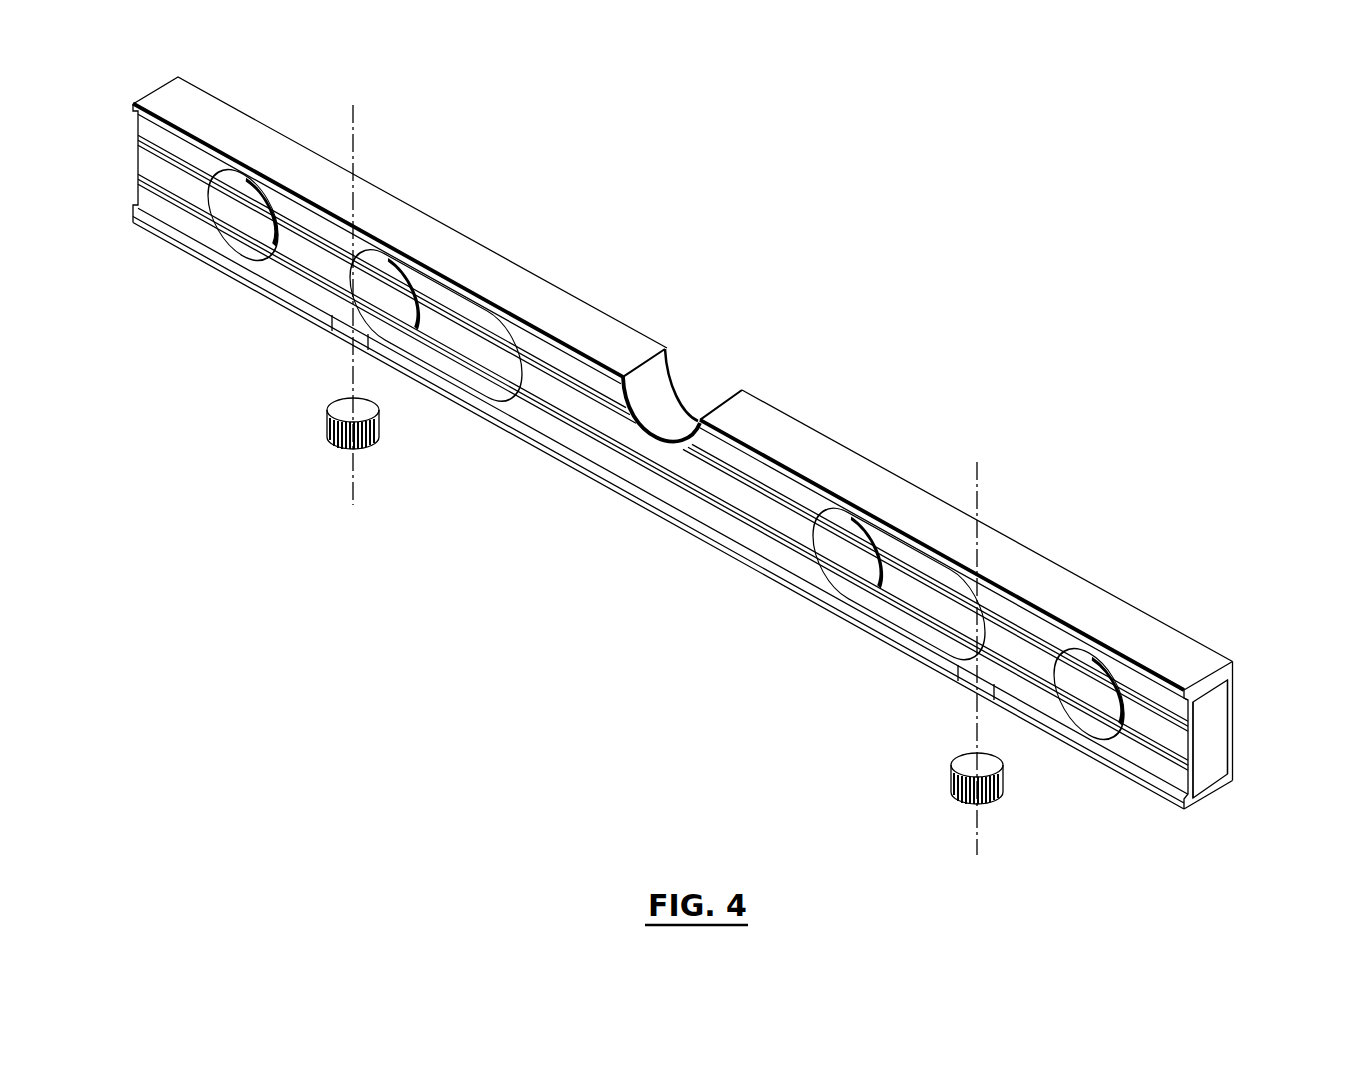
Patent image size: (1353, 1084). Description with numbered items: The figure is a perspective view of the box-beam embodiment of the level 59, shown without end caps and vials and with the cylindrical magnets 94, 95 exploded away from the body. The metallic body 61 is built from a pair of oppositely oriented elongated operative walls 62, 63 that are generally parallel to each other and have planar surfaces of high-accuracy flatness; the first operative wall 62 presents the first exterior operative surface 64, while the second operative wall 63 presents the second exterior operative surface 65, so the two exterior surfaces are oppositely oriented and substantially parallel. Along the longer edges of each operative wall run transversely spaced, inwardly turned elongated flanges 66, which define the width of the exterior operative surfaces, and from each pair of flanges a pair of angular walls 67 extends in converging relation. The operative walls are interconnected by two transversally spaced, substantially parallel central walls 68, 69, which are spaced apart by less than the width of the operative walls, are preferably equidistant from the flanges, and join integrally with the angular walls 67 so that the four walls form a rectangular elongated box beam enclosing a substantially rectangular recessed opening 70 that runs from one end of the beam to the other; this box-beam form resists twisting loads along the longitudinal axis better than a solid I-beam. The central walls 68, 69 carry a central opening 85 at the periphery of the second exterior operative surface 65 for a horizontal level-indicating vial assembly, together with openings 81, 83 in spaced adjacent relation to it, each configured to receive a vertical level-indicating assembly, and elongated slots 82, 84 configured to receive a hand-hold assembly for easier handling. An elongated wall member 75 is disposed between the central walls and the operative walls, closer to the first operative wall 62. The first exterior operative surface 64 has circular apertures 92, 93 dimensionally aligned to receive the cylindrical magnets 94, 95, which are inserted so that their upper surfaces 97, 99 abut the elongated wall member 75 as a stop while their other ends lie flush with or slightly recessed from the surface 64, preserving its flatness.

The level 59 is at (997, 404).
The metallic body 61 is at (650, 271).
The first operative wall 62 is at (661, 517).
The second operative wall 63 is at (788, 462).
The first exterior operative surface 64 is at (1210, 810).
The second exterior operative surface 65 is at (848, 481).
The inwardly turned elongated flanges 66 is at (1240, 660).
The angular walls 67 is at (1242, 672).
The central wall 68 is at (1178, 757).
The central wall 69 is at (1242, 755).
The rectangular shaped recessed opening 70 is at (1204, 695).
The elongated wall member 75 is at (1210, 760).
The opening 81 is at (253, 240).
The elongated slot 82 is at (476, 363).
The opening 83 is at (1092, 716).
The elongated slot 84 is at (886, 602).
The central opening 85 is at (652, 408).
The circular aperture 92 is at (336, 321).
The circular aperture 93 is at (964, 692).
The cylindrical magnet 94 is at (324, 428).
The cylindrical magnet 95 is at (948, 788).
The upper surface 97 is at (342, 414).
The upper surface 99 is at (1006, 762).